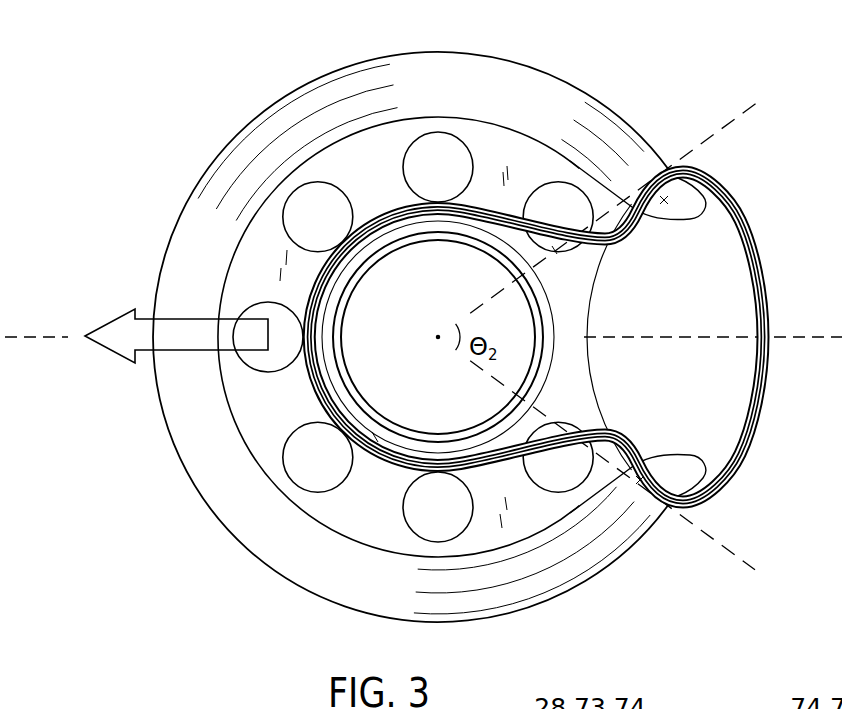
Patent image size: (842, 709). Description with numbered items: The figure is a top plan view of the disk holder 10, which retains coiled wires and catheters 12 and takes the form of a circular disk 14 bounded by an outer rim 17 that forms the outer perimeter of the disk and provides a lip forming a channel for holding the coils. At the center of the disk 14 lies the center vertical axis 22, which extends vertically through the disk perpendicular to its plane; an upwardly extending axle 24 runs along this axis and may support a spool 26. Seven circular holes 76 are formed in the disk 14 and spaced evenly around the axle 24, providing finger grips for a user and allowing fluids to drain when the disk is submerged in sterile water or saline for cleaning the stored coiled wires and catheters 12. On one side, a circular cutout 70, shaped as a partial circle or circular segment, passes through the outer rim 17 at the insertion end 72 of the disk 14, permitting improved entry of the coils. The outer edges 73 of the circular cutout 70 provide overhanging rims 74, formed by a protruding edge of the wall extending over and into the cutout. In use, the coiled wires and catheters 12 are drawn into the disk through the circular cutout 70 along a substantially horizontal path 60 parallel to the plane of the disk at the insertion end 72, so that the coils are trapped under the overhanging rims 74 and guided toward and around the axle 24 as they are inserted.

The disk holder 10 is at (192, 79).
The coiled wires and catheters 12 is at (754, 233).
The circular disk 14 is at (523, 155).
The outer rim 17 is at (623, 123).
The center vertical axis 22 is at (440, 335).
The axle 24 is at (392, 425).
The spool 26 is at (322, 296).
The horizontal path 60 is at (25, 338).
The circular cutout 70 is at (632, 406).
The insertion end 72 is at (630, 318).
The outer edges 73 is at (663, 197).
The overhanging rims 74 is at (680, 208).
The circular holes 76 is at (403, 157).